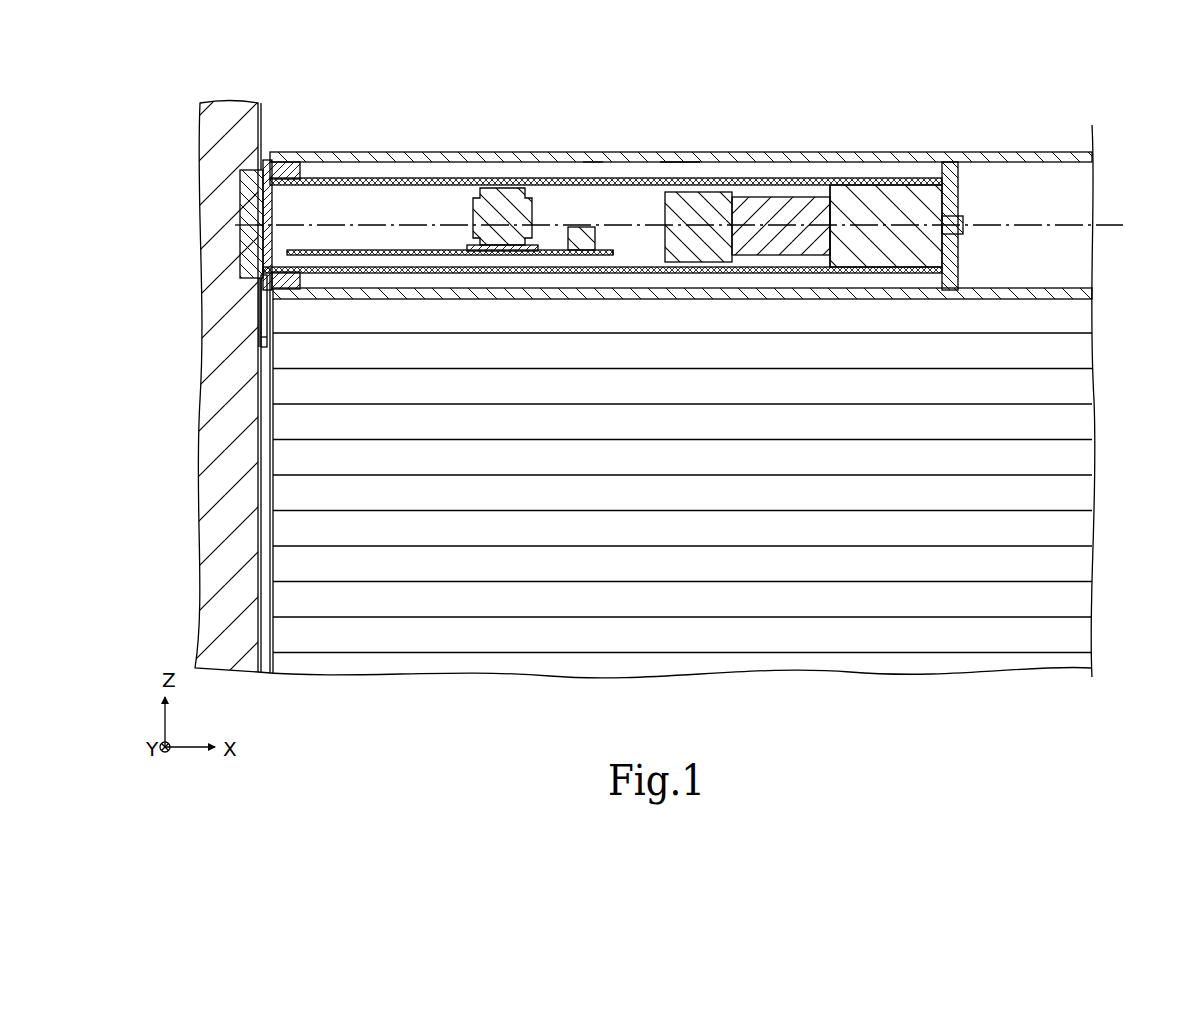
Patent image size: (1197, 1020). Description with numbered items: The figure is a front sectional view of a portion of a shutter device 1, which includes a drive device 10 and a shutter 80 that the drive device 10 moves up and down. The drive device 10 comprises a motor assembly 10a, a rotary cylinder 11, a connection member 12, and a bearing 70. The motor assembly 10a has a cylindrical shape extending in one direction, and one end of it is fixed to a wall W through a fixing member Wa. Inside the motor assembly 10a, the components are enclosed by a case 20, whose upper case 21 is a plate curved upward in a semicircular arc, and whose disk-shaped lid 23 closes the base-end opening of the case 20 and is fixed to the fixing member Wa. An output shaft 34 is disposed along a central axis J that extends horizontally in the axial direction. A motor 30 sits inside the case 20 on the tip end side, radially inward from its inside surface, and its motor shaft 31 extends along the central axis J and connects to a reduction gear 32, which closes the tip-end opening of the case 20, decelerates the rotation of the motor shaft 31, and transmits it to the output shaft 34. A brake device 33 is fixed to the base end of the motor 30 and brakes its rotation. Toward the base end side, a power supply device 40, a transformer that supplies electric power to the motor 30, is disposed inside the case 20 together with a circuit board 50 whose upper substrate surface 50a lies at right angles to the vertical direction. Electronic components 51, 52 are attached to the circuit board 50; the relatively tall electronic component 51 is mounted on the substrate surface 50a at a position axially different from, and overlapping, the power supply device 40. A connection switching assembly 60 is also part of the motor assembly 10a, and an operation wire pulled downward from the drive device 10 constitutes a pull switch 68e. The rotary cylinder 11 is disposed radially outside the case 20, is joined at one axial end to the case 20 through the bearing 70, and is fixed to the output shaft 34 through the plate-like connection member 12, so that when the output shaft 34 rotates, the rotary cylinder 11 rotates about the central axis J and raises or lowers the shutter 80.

The shutter device 1 is at (1057, 118).
The drive device 10 is at (955, 148).
The motor assembly 10a is at (682, 170).
The rotary cylinder 11 is at (593, 162).
The connection member 12 is at (958, 185).
The case 20 is at (646, 176).
The upper case 21 is at (747, 178).
The lid 23 is at (266, 163).
The motor 30 is at (785, 203).
The motor shaft 31 is at (840, 237).
The reduction gear 32 is at (885, 198).
The brake device 33 is at (703, 205).
The output shaft 34 is at (963, 226).
The power supply device 40 is at (520, 200).
The circuit board 50 is at (548, 250).
The substrate surface 50a is at (603, 252).
The electronic component 51 is at (577, 233).
The electronic component 52 is at (520, 250).
The connection switching assembly 60 is at (257, 295).
The pull switch 68e is at (267, 333).
The bearing 70 is at (290, 174).
The shutter 80 is at (1073, 568).
The wall W is at (233, 467).
The fixing member Wa is at (252, 208).
The central axis J is at (1125, 225).